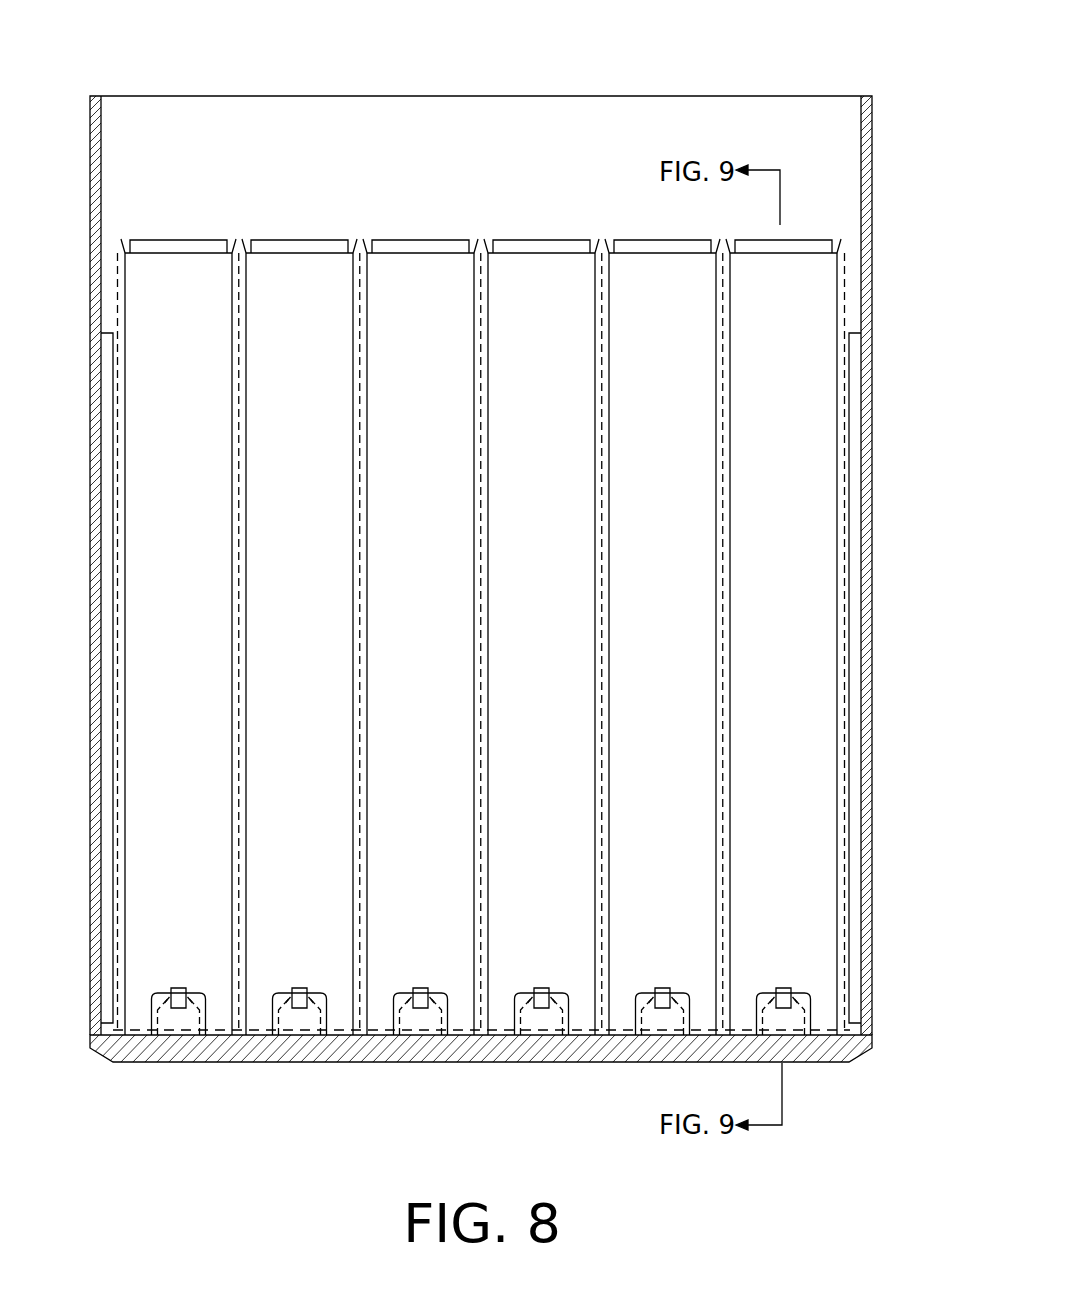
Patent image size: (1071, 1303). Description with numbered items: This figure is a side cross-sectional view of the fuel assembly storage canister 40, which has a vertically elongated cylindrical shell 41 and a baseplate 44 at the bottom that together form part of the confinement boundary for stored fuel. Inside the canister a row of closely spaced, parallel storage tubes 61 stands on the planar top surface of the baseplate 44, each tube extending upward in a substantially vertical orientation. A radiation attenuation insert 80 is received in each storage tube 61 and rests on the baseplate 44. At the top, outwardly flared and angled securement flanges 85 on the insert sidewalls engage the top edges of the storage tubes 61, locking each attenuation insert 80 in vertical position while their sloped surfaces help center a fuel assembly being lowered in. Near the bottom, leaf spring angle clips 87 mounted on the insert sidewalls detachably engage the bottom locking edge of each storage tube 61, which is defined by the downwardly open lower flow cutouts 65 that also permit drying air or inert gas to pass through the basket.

The fuel assembly storage canister 40 is at (54, 119).
The cylindrical shell 41 is at (872, 187).
The baseplate 44 is at (567, 1064).
The storage tube 61 is at (240, 522).
The lower flow cutout 65 is at (282, 1006).
The radiation attenuation insert 80 is at (643, 536).
The securement flange 85 is at (356, 246).
The spring angle clip 87 is at (307, 1007).